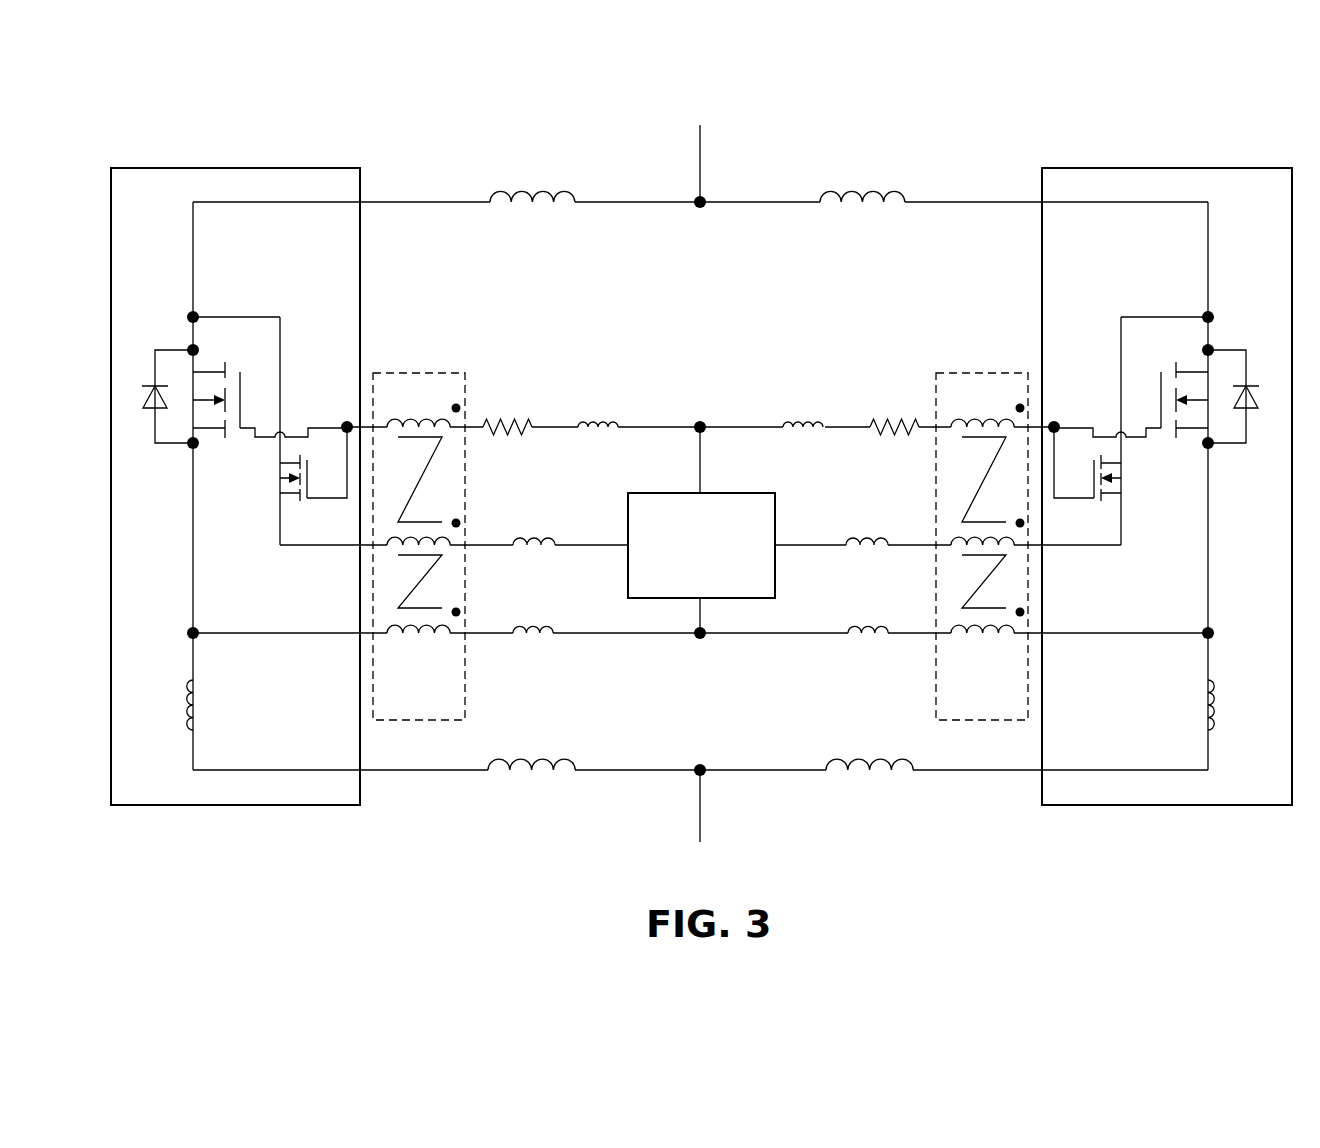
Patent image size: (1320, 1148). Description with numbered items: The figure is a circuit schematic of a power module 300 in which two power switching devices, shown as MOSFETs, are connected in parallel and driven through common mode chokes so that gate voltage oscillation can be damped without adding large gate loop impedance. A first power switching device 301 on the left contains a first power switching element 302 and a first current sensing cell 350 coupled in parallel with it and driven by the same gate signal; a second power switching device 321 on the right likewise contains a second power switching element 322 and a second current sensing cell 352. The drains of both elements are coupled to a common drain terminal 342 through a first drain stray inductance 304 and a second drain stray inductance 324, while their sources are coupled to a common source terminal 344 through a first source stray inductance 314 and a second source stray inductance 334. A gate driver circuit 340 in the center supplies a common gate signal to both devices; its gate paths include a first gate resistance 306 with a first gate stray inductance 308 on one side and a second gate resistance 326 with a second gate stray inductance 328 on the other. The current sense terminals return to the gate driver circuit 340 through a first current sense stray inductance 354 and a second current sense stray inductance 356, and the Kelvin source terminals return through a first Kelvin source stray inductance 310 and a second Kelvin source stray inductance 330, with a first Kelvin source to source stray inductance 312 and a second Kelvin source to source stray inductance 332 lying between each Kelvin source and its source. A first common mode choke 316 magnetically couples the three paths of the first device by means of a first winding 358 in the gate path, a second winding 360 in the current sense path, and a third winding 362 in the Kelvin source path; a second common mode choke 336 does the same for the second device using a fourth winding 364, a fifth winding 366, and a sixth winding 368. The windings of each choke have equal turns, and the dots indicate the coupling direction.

The power module 300 is at (1022, 103).
The first power switching device 301 is at (262, 167).
The second power switching device 321 is at (1141, 167).
The first power switching element 302 is at (240, 395).
The first current sensing cell 350 is at (280, 488).
The second power switching element 322 is at (1161, 395).
The second current sensing cell 352 is at (1121, 488).
The first drain stray inductance 304 is at (499, 185).
The second drain stray inductance 324 is at (900, 185).
The drain terminal 342 is at (700, 165).
The source terminal 344 is at (700, 828).
The first common mode choke 316 is at (442, 372).
The second common mode choke 336 is at (959, 372).
The first winding 358 is at (455, 420).
The second winding 360 is at (455, 535).
The third winding 362 is at (458, 623).
The fourth winding 364 is at (958, 415).
The fifth winding 366 is at (955, 535).
The sixth winding 368 is at (955, 620).
The first gate resistance 306 is at (530, 420).
The second gate resistance 326 is at (878, 420).
The first gate stray inductance 308 is at (617, 421).
The second gate stray inductance 328 is at (783, 421).
The gate driver circuit 340 is at (720, 493).
The first current sense stray inductance 354 is at (530, 536).
The second current sense stray inductance 356 is at (874, 536).
The first Kelvin source stray inductance 310 is at (530, 624).
The second Kelvin source stray inductance 330 is at (874, 624).
The first Kelvin source to source stray inductance 312 is at (196, 697).
The second Kelvin source to source stray inductance 332 is at (1205, 697).
The first source stray inductance 314 is at (545, 752).
The second source stray inductance 334 is at (858, 752).